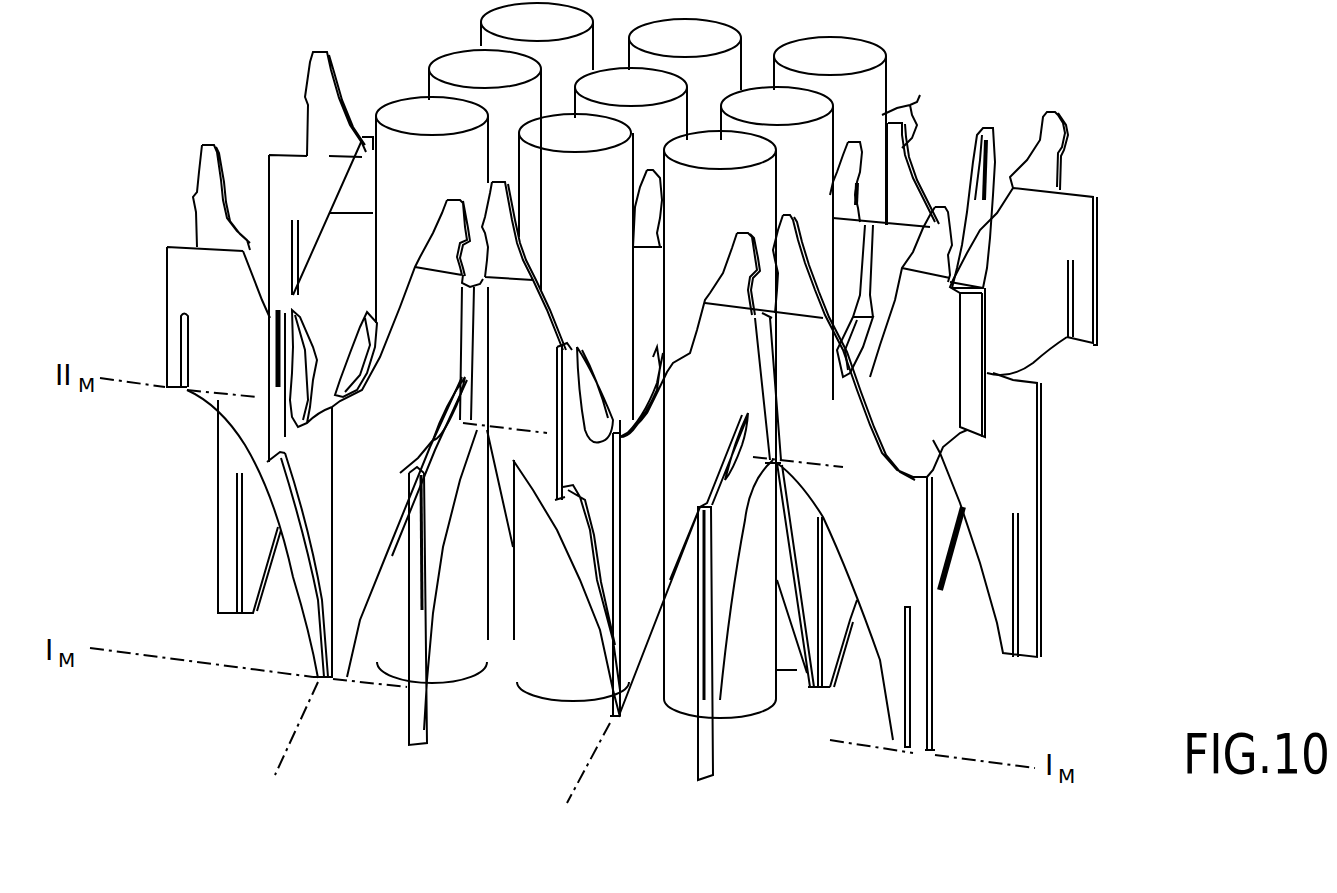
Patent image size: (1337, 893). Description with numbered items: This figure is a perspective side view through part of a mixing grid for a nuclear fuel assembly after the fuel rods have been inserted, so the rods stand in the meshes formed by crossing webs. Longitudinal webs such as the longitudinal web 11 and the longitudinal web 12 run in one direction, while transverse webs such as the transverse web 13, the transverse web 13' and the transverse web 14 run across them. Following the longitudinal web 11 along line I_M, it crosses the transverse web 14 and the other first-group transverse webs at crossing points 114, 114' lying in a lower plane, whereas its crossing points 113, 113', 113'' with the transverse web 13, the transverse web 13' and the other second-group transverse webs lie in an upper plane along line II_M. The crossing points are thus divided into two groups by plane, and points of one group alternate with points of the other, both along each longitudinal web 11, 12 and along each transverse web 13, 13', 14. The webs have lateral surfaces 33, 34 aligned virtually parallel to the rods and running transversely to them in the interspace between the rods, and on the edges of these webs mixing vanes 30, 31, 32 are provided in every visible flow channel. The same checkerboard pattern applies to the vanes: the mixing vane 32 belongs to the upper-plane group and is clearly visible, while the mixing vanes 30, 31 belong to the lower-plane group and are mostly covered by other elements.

The longitudinal web 11 is at (918, 700).
The longitudinal web 12 is at (970, 327).
The transverse web 13 is at (443, 609).
The transverse web 13' is at (795, 626).
The transverse web 14 is at (600, 697).
The mixing vane 30 is at (602, 360).
The mixing vane 31 is at (667, 367).
The mixing vane 32 is at (914, 128).
The lateral surface 33 is at (240, 433).
The lateral surface 34 is at (317, 513).
The crossing point 113 is at (473, 380).
The crossing point 113' is at (731, 513).
The crossing point 113'' is at (218, 266).
The crossing point 114 is at (572, 611).
The crossing point 114' is at (342, 576).